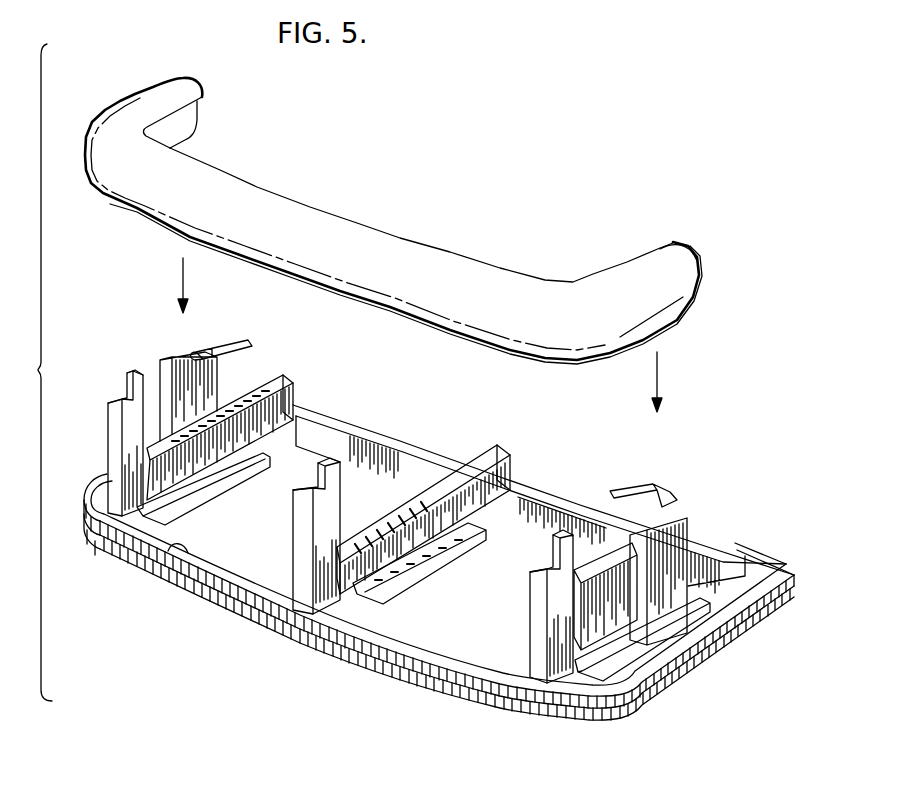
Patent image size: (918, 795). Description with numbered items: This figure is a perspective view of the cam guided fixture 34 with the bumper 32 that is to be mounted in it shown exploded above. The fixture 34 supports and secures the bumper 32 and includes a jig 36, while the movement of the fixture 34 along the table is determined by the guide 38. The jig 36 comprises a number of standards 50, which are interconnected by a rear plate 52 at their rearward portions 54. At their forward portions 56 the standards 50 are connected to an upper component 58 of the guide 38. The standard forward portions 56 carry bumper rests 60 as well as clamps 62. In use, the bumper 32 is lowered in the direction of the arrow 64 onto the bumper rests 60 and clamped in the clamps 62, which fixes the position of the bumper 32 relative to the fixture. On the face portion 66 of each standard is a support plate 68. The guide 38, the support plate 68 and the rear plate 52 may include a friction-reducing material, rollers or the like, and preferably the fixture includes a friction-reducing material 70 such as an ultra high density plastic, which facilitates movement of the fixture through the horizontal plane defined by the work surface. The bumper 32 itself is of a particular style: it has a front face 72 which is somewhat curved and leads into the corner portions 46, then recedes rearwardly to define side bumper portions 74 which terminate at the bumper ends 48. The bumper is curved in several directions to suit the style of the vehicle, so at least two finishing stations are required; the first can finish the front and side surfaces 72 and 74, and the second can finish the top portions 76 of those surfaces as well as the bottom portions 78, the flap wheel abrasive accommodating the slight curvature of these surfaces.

The bumper 32 is at (363, 222).
The fixture 34 is at (224, 622).
The jig 36 is at (478, 447).
The guide 38 is at (688, 688).
The corner portions 46 is at (80, 160).
The bumper ends 48 is at (189, 76).
The standards 50 is at (537, 597).
The rear plate 52 is at (335, 432).
The rearward portions 54 is at (507, 470).
The forward portions 56 is at (300, 583).
The upper component 58 is at (177, 570).
The bumper rests 60 is at (312, 494).
The clamps 62 is at (210, 387).
The arrow 64 is at (658, 377).
The face portion 66 is at (430, 517).
The support plate 68 is at (425, 568).
The friction-reducing material 70 is at (550, 500).
The front face 72 is at (383, 283).
The side bumper portions 74 is at (652, 294).
The top portions 76 is at (218, 180).
The bottom portions 78 is at (131, 216).